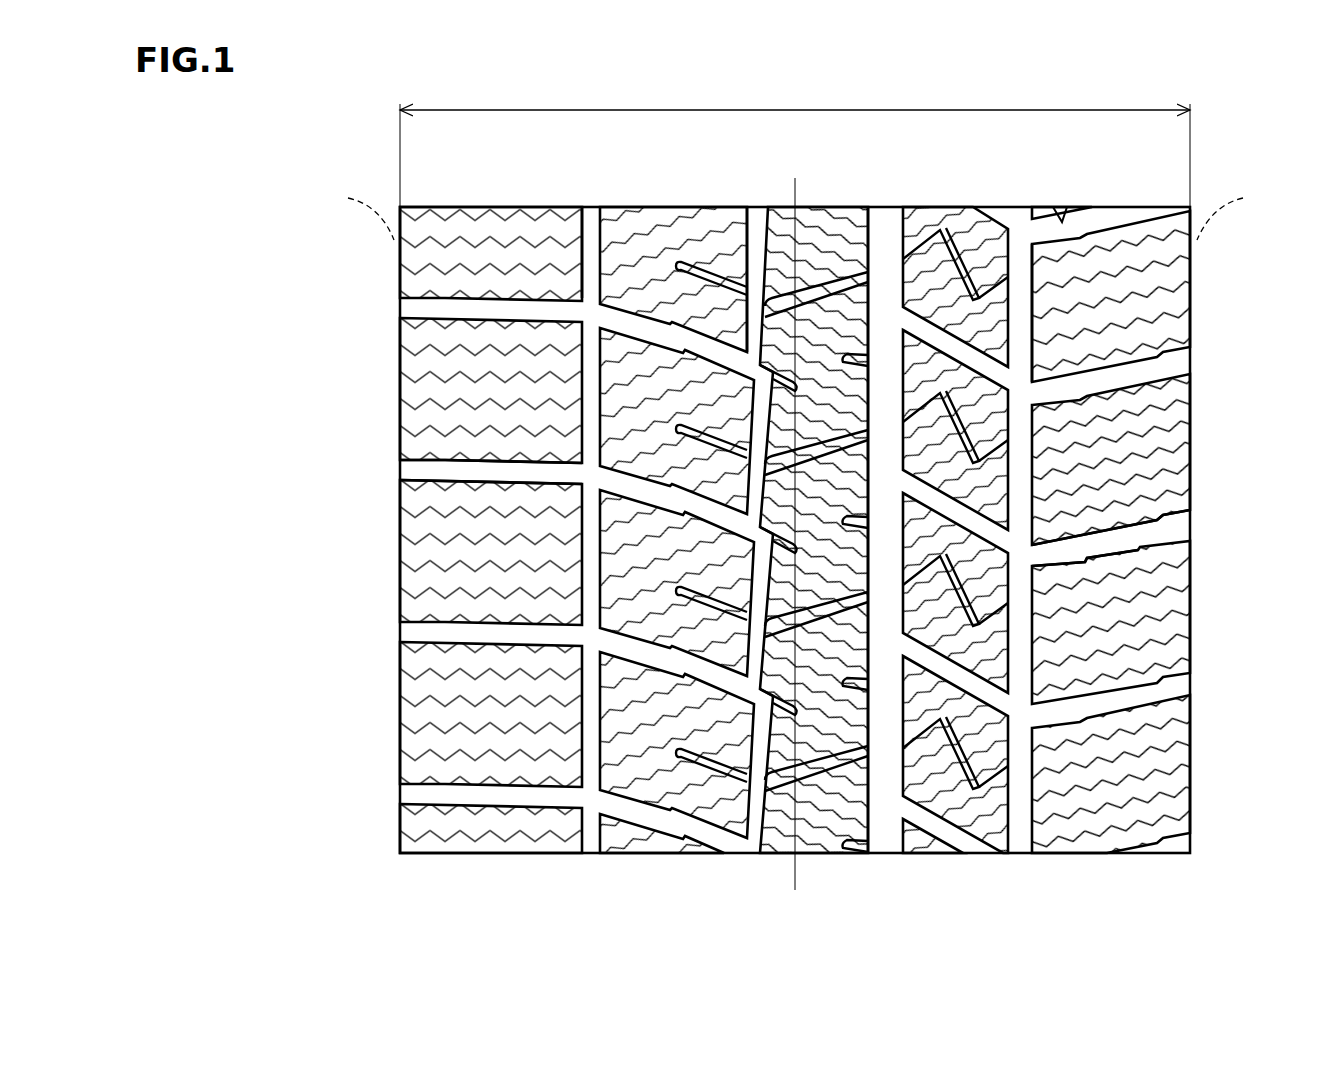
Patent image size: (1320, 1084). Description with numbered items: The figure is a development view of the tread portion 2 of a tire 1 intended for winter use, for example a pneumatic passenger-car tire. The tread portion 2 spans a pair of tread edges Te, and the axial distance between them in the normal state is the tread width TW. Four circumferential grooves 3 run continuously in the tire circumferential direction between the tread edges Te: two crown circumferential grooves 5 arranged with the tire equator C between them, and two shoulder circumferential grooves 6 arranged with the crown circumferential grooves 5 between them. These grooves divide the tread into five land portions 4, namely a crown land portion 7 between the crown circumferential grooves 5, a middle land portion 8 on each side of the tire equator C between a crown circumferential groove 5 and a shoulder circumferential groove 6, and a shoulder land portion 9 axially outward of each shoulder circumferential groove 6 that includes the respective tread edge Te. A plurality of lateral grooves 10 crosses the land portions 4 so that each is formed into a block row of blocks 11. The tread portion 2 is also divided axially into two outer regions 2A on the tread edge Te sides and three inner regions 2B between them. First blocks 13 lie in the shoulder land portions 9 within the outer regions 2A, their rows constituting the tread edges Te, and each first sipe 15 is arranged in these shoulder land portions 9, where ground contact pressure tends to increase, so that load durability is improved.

The tire 1 is at (990, 195).
The tread portion 2 is at (677, 541).
The outer region 2A is at (786, 539).
The inner region 2B is at (664, 554).
The circumferential groove 3 is at (786, 554).
The land portion 4 is at (795, 262).
The crown circumferential groove 5 is at (755, 235).
The shoulder circumferential groove 6 is at (592, 236).
The crown land portion 7 is at (820, 251).
The middle land portion 8 is at (668, 250).
The shoulder land portion 9 is at (497, 231).
The lateral groove 10 is at (461, 468).
The block 11 is at (658, 391).
The first block 13 is at (468, 548).
The first sipe 15 is at (443, 401).
The tire equator C is at (795, 519).
The tread edge Te is at (796, 203).
The tread width TW is at (795, 143).